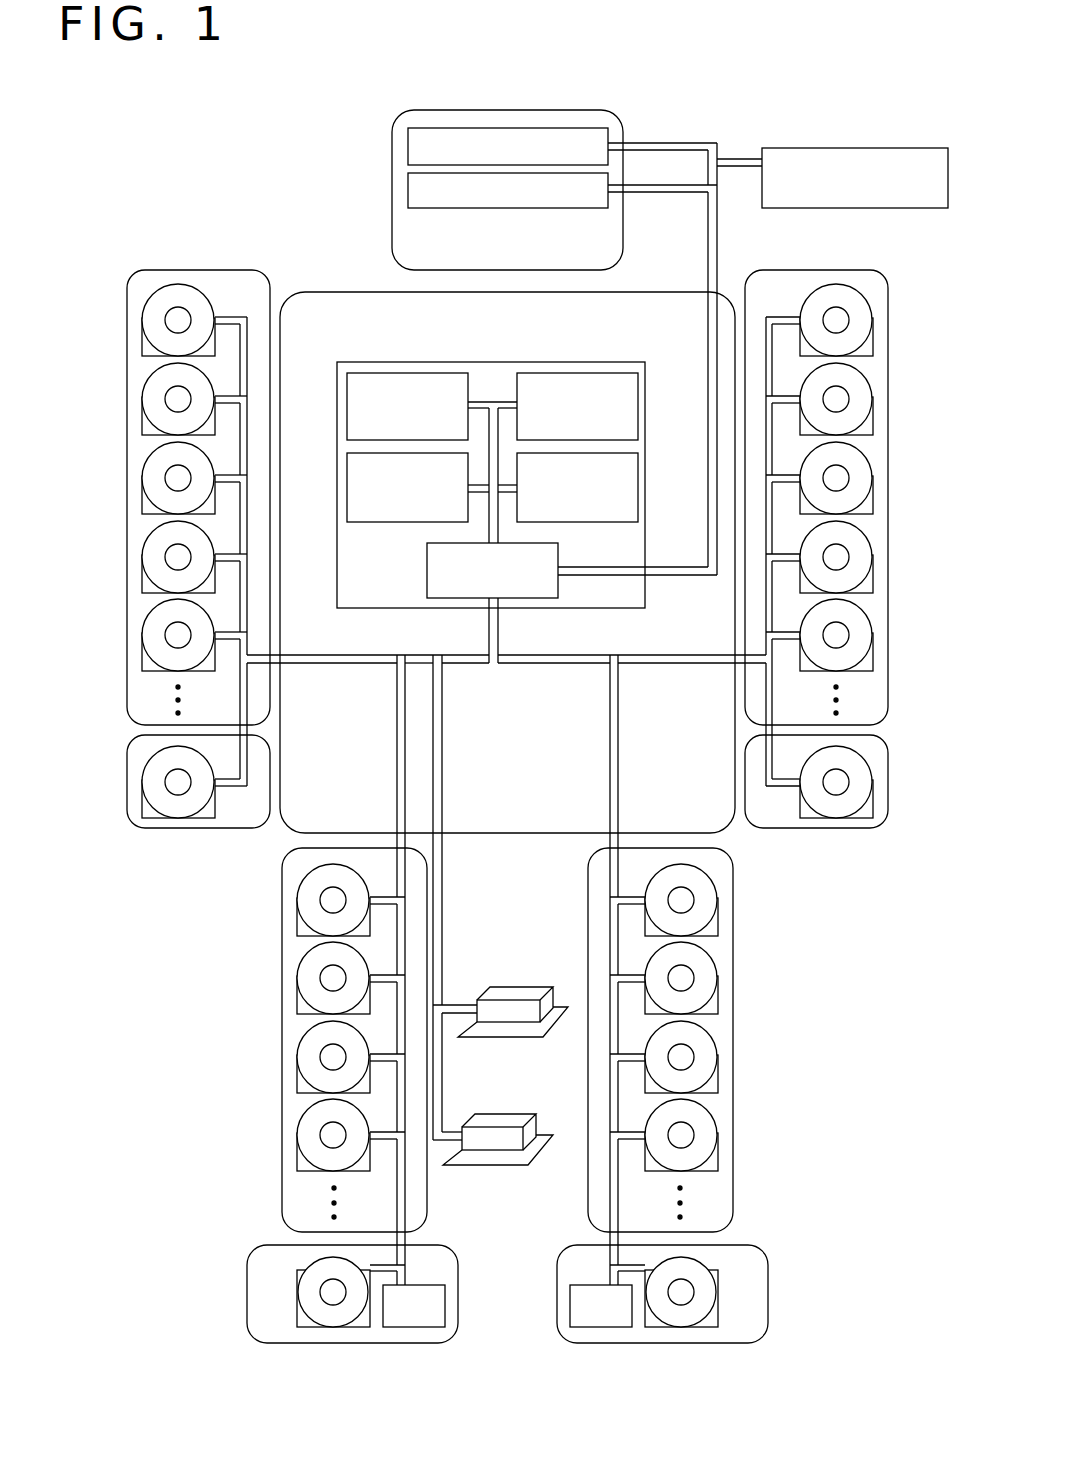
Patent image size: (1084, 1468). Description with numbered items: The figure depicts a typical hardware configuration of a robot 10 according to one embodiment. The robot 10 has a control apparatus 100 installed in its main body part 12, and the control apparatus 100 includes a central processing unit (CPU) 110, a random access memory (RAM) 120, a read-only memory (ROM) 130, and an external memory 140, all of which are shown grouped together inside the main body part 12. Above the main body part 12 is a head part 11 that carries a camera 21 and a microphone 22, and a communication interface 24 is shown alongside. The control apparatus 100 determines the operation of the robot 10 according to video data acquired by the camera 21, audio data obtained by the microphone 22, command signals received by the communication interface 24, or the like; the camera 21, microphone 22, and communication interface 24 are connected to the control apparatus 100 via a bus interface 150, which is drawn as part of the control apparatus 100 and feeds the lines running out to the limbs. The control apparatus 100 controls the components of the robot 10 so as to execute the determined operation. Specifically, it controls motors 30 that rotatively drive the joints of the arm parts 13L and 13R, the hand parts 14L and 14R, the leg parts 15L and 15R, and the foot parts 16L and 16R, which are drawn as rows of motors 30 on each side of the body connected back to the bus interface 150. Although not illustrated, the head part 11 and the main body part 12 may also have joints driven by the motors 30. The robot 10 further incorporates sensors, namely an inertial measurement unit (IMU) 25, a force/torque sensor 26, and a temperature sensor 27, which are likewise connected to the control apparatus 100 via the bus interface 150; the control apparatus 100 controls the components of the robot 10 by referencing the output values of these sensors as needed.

The robot 10 is at (218, 134).
The head part 11 is at (567, 110).
The main body part 12 is at (362, 290).
The arm part 13R is at (205, 270).
The arm part 13L is at (847, 272).
The hand part 14R is at (172, 830).
The hand part 14L is at (843, 830).
The leg part 15R is at (282, 1076).
The leg part 15L is at (734, 1070).
The foot part 16R is at (302, 1315).
The foot part 16L is at (770, 1283).
The camera 21 is at (403, 148).
The microphone 22 is at (403, 188).
The communication interface 24 is at (855, 148).
The inertial measurement unit 25 is at (511, 986).
The force/torque sensor 26 is at (413, 1328).
The temperature sensor 27 is at (492, 1115).
The motor 30 is at (143, 308).
The control apparatus 100 is at (587, 362).
The central processing unit 110 is at (356, 373).
The random access memory 120 is at (532, 373).
The read-only memory 130 is at (623, 522).
The external memory 140 is at (365, 522).
The bus interface 150 is at (455, 598).